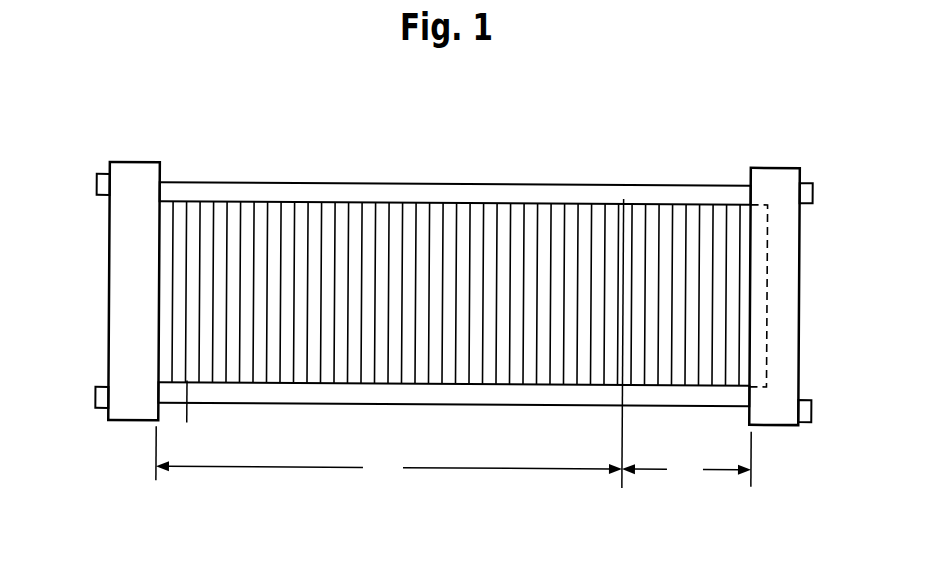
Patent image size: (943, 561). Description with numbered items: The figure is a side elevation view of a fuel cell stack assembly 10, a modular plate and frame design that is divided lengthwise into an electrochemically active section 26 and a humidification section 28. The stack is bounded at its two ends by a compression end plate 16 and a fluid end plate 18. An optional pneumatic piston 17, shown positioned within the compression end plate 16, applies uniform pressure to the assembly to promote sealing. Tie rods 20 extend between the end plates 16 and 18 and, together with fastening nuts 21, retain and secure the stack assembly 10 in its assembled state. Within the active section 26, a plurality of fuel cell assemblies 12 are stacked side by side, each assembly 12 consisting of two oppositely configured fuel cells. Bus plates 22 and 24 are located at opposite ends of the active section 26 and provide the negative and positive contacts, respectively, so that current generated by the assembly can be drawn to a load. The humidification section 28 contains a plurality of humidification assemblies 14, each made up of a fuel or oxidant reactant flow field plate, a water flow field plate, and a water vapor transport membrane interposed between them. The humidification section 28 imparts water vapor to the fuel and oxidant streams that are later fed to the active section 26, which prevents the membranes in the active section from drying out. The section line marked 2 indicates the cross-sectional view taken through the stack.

The section line 2- 2 is at (104, 138).
The fuel cell stack assembly 10 is at (597, 153).
The fuel cell assembly 12 is at (232, 212).
The humidification assembly 14 is at (665, 213).
The compression end plate 16 is at (775, 178).
The pneumatic piston 17 is at (756, 294).
The fluid end plate 18 is at (138, 172).
The tie rods 20 is at (427, 184).
The fastening nuts 21 is at (98, 389).
The bus plate 22 is at (189, 411).
The bus plate 24 is at (622, 415).
The electrochemically active section 26 is at (389, 455).
The humidification section 28 is at (686, 459).